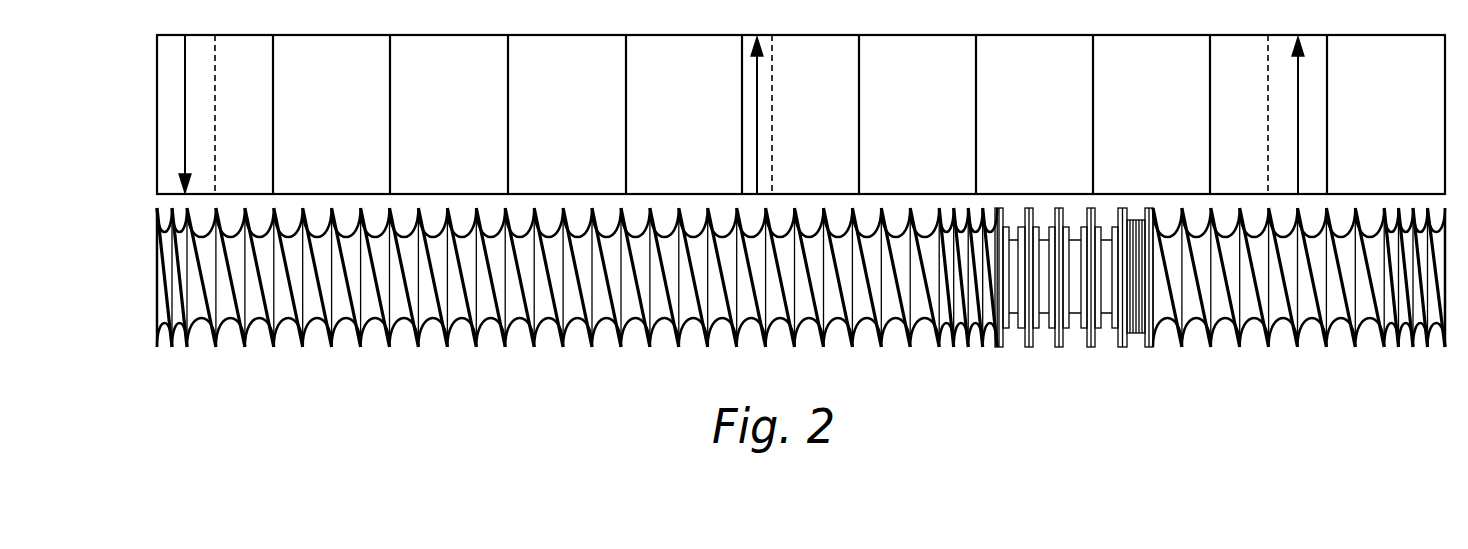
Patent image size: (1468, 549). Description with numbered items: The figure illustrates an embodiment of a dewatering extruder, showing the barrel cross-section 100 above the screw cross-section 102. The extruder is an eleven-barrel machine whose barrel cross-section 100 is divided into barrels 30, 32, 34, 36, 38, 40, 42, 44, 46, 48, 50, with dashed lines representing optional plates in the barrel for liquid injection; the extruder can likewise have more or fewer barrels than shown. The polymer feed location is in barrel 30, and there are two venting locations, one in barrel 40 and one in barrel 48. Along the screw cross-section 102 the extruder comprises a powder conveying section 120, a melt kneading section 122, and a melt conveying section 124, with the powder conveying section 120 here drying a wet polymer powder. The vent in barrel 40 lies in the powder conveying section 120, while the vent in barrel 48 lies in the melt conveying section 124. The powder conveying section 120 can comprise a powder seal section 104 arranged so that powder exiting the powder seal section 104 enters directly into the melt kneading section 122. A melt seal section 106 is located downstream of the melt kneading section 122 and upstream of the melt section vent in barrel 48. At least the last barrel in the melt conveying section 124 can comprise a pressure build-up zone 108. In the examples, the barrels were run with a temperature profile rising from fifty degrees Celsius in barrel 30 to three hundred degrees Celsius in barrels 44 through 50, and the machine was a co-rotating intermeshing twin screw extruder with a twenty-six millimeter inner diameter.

The barrel cross-section 100 is at (122, 136).
The screw cross-section 102 is at (122, 276).
The barrel 30 is at (194, 109).
The barrel 32 is at (318, 118).
The barrel 34 is at (436, 118).
The barrel 36 is at (554, 118).
The barrel 38 is at (671, 118).
The barrel 40 is at (800, 118).
The barrel 42 is at (904, 118).
The barrel 44 is at (1022, 118).
The barrel 46 is at (1138, 118).
The barrel 48 is at (1225, 118).
The barrel 50 is at (1367, 118).
The powder seal section 104 is at (944, 293).
The melt seal section 106 is at (1182, 299).
The pressure build-up zone 108 is at (1374, 293).
The powder conveying section 120 is at (577, 319).
The melt kneading section 122 is at (1116, 319).
The melt conveying section 124 is at (1285, 319).